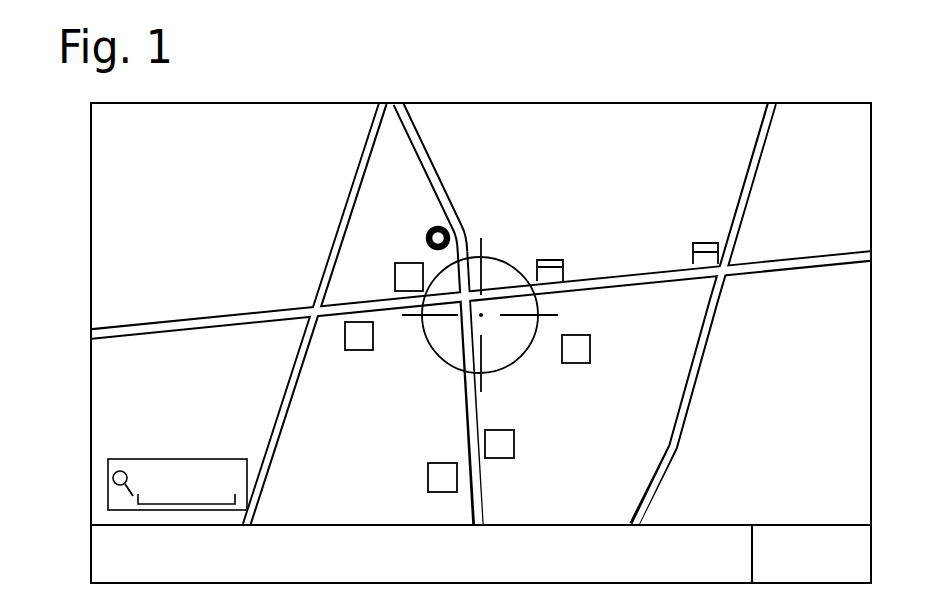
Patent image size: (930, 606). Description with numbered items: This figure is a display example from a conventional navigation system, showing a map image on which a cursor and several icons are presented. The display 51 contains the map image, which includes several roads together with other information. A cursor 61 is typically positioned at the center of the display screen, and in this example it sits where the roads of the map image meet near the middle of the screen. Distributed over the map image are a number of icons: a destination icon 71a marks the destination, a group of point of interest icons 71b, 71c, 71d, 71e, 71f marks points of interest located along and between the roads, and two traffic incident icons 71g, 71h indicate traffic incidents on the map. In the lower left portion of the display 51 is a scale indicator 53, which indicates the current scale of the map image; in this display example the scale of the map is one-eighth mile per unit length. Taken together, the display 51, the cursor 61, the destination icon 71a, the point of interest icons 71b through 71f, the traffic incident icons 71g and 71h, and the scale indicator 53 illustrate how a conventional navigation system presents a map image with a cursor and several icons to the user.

The display 51 is at (637, 103).
The scale indicator 53 is at (117, 493).
The cursor 61 is at (513, 365).
The destination icon 71a is at (430, 226).
The point of interest icon 71b is at (406, 262).
The point of interest icon 71c is at (373, 343).
The point of interest icon 71d is at (572, 335).
The point of interest icon 71e is at (518, 448).
The point of interest icon 71f is at (438, 462).
The traffic incident icon 71g is at (545, 259).
The traffic incident icon 71h is at (696, 244).